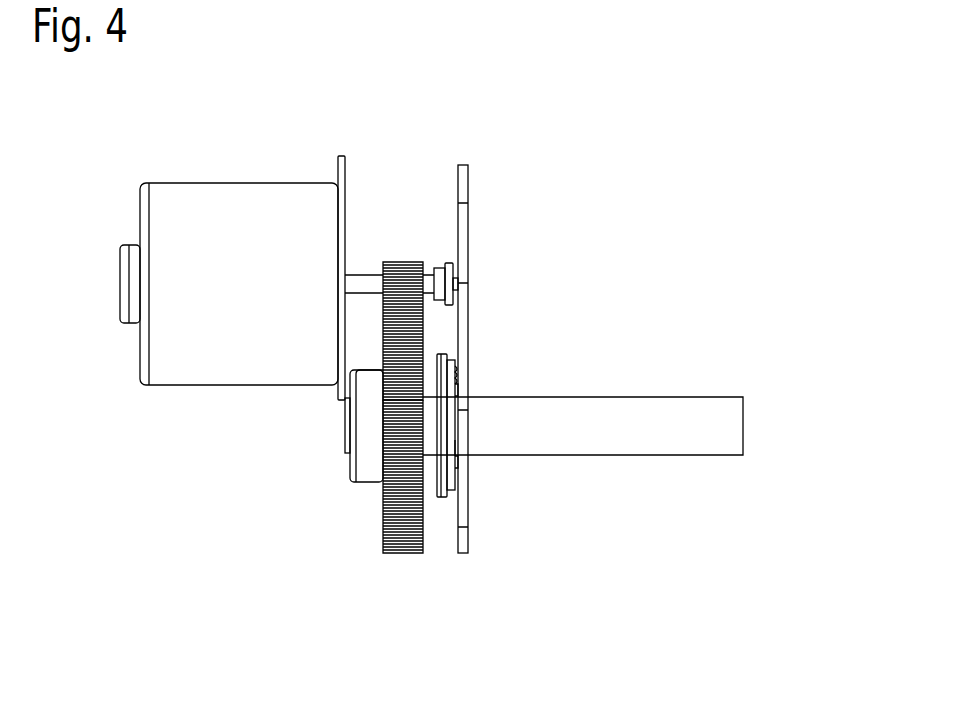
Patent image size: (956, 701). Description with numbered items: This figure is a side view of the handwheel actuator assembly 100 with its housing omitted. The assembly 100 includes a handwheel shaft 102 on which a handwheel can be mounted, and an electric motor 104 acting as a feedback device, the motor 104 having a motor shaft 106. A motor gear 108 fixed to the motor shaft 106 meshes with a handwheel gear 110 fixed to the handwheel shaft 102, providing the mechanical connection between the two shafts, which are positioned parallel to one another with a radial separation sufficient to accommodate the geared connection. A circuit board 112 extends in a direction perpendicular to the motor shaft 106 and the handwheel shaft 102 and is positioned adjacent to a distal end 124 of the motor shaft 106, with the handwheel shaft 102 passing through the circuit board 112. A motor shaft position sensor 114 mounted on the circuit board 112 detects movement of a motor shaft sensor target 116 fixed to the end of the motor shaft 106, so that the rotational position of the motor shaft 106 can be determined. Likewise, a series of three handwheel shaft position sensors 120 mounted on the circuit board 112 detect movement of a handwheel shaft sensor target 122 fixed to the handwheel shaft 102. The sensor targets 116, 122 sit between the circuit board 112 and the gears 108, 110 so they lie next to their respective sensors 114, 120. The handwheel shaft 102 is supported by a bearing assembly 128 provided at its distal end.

The handwheel actuator assembly 100 is at (645, 137).
The handwheel shaft 102 is at (728, 431).
The electric motor 104 is at (183, 184).
The motor shaft 106 is at (363, 275).
The motor gear 108 is at (399, 262).
The handwheel gear 110 is at (403, 554).
The circuit board 112 is at (468, 258).
The motor shaft position sensor 114 is at (458, 284).
The motor shaft sensor target 116 is at (452, 263).
The handwheel shaft position sensors 120 is at (455, 393).
The handwheel shaft sensor target 122 is at (454, 465).
The distal end of the motor shaft 124 is at (441, 258).
The bearing assembly 128 is at (362, 465).